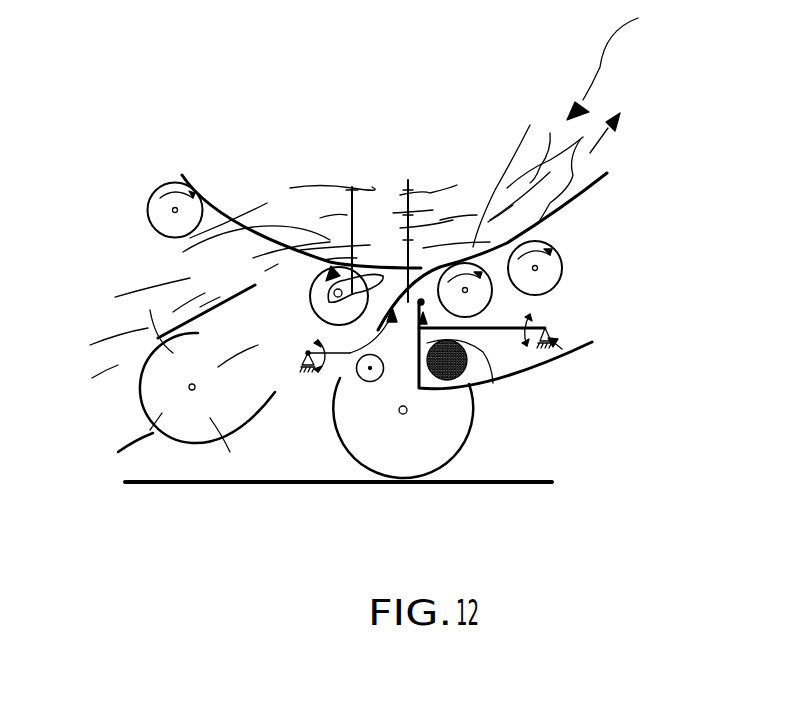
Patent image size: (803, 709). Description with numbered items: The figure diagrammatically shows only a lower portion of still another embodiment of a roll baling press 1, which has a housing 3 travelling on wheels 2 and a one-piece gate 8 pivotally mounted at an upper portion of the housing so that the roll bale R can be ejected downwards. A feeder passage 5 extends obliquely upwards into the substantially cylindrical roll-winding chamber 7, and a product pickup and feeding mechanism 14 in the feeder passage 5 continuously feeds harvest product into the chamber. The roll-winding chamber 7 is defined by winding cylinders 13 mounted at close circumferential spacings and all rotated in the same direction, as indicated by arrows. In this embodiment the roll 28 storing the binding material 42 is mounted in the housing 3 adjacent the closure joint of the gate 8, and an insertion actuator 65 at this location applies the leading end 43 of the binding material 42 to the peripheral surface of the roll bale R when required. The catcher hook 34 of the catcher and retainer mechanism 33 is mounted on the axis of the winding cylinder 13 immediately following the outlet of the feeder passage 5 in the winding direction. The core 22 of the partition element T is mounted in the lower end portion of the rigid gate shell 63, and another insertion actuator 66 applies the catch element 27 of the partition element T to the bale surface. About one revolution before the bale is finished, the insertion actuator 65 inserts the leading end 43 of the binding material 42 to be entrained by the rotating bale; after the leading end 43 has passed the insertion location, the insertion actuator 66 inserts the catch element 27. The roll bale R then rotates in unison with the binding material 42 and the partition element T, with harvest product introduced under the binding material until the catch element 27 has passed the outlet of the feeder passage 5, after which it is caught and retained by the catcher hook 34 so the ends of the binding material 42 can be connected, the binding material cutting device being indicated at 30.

The roll baling press 1 is at (670, 4).
The wheels 2 is at (480, 385).
The housing 3 is at (340, 188).
The feeder passage 5 is at (198, 290).
The roll-winding chamber 7 is at (587, 170).
The gate 8 is at (585, 343).
The winding cylinders 13 is at (157, 180).
The product pickup and feeding mechanism 14 is at (197, 300).
The core 22 is at (447, 388).
The catch element 27 is at (440, 250).
The roll 28 is at (376, 382).
The separator mechanism 30 is at (406, 297).
The catcher and retainer mechanism 33 is at (325, 268).
The catcher hook 34 is at (370, 265).
The binding material 42 is at (390, 322).
The leading end 43 is at (530, 125).
The rigid shell 63 is at (535, 357).
The insertion actuator 65 is at (318, 373).
The insertion actuator 66 is at (527, 323).
The roll bale R is at (227, 187).
The partition element T is at (472, 343).